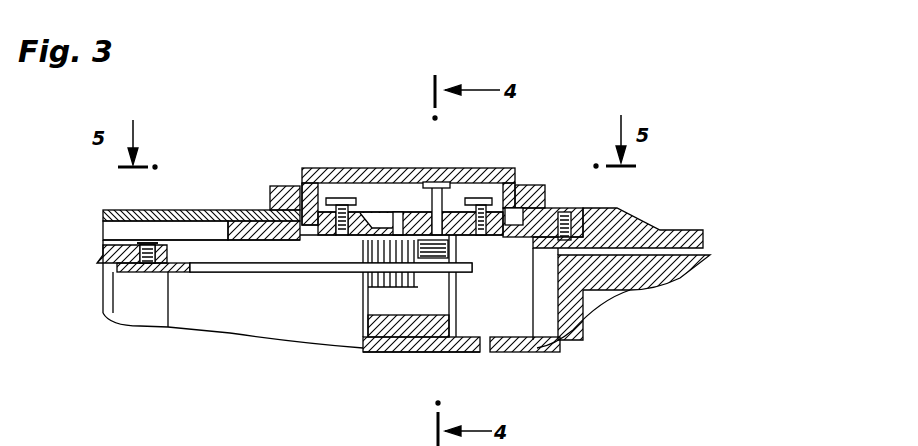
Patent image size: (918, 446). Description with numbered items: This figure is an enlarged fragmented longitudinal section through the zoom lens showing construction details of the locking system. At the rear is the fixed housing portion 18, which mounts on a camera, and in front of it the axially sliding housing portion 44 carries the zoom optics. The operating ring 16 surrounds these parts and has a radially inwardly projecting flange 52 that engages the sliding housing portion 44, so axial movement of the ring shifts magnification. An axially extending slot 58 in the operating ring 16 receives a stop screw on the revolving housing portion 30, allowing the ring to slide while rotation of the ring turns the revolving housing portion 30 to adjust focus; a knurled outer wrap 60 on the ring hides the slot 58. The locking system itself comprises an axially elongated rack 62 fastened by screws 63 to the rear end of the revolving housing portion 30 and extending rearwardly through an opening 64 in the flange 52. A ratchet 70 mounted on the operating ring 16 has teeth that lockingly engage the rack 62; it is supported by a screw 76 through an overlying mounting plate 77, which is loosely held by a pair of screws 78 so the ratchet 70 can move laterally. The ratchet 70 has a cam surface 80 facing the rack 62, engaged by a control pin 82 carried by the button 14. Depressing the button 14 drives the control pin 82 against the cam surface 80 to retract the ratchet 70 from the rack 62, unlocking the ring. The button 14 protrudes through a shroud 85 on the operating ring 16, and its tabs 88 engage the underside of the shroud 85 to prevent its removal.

The button 14 is at (330, 170).
The operating ring 16 is at (612, 227).
The fixed housing portion 18 is at (575, 307).
The revolving housing portion 30 is at (110, 252).
The axially sliding housing portion 44 is at (400, 342).
The flange 52 is at (440, 330).
The slot 58 is at (220, 224).
The outer wrap 60 is at (122, 210).
The rack 62 is at (207, 272).
The screws 63 is at (148, 245).
The opening 64 is at (437, 313).
The ratchet 70 is at (390, 288).
The screw 76 is at (405, 220).
The mounting plate 77 is at (368, 218).
The screws 78 is at (315, 170).
The cam surface 80 is at (455, 240).
The control pin 82 is at (450, 200).
The shroud 85 is at (533, 188).
The tabs 88 is at (547, 205).